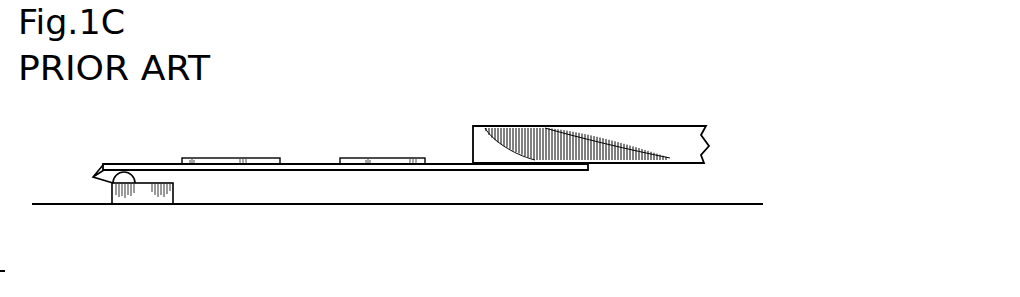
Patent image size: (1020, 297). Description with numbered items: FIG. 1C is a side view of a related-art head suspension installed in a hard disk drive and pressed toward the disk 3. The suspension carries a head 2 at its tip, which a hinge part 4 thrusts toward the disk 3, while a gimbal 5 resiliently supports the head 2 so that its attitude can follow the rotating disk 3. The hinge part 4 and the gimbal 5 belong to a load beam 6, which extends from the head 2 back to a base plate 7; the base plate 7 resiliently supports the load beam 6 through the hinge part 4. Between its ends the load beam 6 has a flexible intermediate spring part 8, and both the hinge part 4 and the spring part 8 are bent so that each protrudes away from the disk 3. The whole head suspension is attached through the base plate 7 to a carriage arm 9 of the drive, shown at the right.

The head 2 is at (148, 196).
The disk 3 is at (63, 203).
The hinge part 4 is at (445, 163).
The gimbal 5 is at (94, 176).
The load beam 6 is at (345, 158).
The base plate 7 is at (537, 172).
The spring part 8 is at (305, 162).
The carriage arm 9 is at (615, 130).